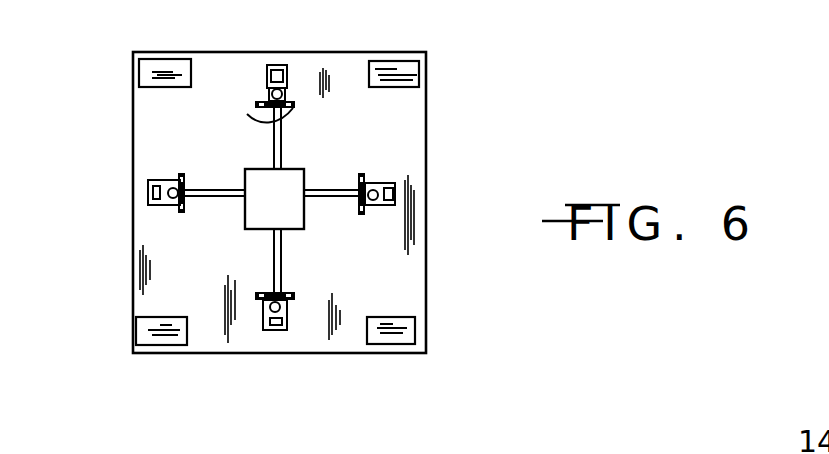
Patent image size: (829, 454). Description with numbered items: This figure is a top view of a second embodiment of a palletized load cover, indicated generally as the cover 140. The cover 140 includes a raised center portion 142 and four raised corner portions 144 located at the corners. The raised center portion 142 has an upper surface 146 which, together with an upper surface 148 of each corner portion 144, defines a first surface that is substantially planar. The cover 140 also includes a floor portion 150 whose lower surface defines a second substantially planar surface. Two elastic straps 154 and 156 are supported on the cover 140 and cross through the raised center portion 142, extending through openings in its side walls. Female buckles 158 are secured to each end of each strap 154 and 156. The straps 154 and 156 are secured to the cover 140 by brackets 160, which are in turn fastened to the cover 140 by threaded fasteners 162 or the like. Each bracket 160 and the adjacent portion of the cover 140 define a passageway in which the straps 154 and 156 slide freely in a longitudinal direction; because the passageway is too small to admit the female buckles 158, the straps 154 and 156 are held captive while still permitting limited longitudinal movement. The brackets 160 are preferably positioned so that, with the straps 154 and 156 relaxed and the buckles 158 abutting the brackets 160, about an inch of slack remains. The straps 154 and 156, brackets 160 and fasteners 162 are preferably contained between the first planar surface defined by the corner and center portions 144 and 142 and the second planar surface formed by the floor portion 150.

The cover 140 is at (448, 160).
The raised center portion 142 is at (298, 166).
The raised corner portions 144 is at (155, 87).
The upper surface 146 is at (298, 213).
The upper surface 148 is at (405, 73).
The floor portion 150 is at (398, 270).
The elastic strap 154 is at (233, 158).
The elastic strap 156 is at (272, 256).
The female buckles 158 is at (385, 206).
The brackets 160 is at (350, 178).
The threaded fasteners 162 is at (247, 114).